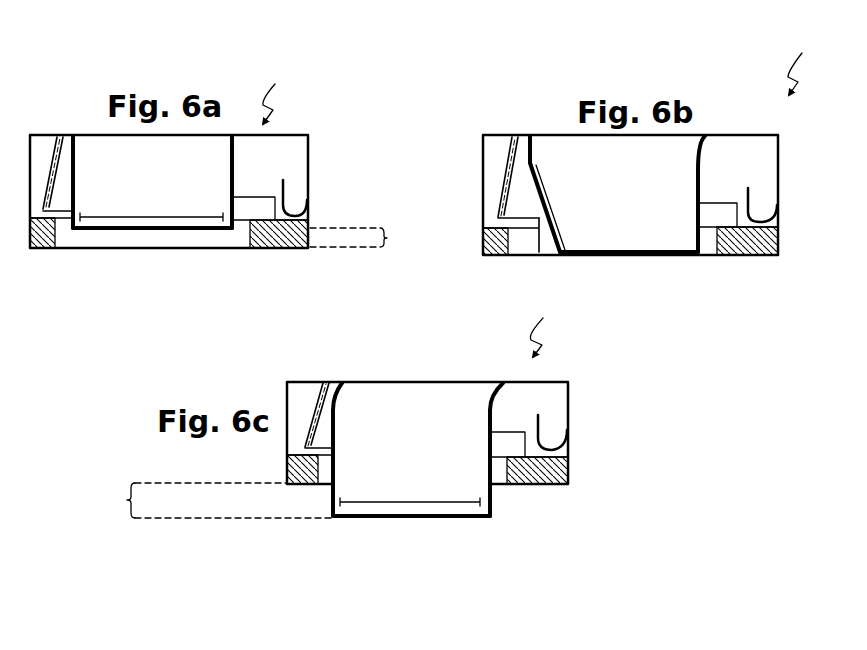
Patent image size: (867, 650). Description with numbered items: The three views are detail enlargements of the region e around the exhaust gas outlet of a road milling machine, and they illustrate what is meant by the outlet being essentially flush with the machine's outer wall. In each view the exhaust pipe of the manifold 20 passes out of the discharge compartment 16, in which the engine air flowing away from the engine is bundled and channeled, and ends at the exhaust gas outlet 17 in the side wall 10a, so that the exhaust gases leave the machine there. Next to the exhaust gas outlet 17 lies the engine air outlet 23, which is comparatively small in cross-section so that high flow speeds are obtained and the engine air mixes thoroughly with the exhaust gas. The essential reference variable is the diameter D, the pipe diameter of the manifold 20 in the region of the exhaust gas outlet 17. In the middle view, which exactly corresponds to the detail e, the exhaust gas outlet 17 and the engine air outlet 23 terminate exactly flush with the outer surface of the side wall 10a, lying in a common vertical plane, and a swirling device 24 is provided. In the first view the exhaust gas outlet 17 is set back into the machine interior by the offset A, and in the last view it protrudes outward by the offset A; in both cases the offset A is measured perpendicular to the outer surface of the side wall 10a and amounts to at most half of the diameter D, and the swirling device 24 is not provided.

In FIG. 6A, the side wall 10a is at (265, 248).
In FIG. 6B, the side wall 10a is at (737, 255).
In FIG. 6C, the side wall 10a is at (568, 484).
In FIG. 6A, the discharge compartment 16 is at (272, 158).
In FIG. 6B, the discharge compartment 16 is at (740, 160).
In FIG. 6C, the discharge compartment 16 is at (528, 395).
In FIG. 6A, the exhaust gas outlet 17 is at (142, 228).
In FIG. 6B, the exhaust gas outlet 17 is at (638, 255).
In FIG. 6C, the exhaust gas outlet 17 is at (437, 518).
In FIG. 6A, the manifold 20 is at (63, 137).
In FIG. 6B, the manifold 20 is at (528, 137).
In FIG. 6C, the manifold 20 is at (343, 382).
In FIG. 6A, the engine air outlet 23 is at (55, 248).
In FIG. 6B, the engine air outlet 23 is at (528, 245).
In FIG. 6C, the engine air outlet 23 is at (500, 487).
In FIG. 6B, the swirling device 24 is at (558, 250).
In FIG. 6A, the diameter D is at (188, 218).
In FIG. 6C, the diameter D is at (387, 503).
In FIG. 6A, the offset A is at (360, 237).
In FIG. 6C, the offset A is at (220, 500).
In FIG. 6A, the region e is at (273, 92).
In FIG. 6B, the region e is at (798, 63).
In FIG. 6C, the region e is at (539, 327).